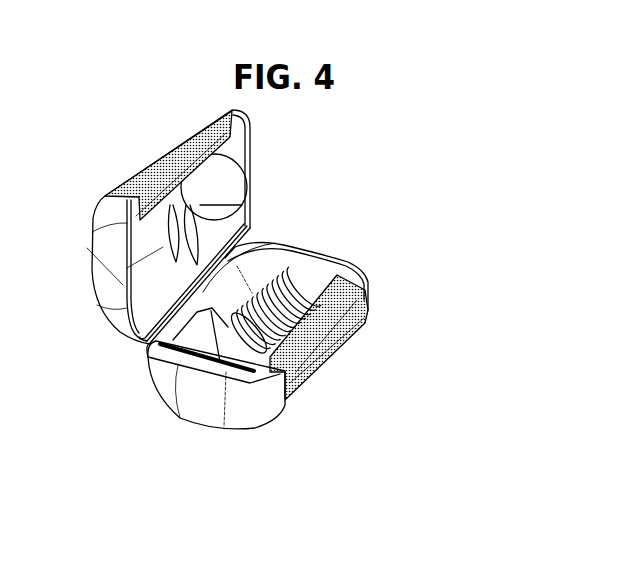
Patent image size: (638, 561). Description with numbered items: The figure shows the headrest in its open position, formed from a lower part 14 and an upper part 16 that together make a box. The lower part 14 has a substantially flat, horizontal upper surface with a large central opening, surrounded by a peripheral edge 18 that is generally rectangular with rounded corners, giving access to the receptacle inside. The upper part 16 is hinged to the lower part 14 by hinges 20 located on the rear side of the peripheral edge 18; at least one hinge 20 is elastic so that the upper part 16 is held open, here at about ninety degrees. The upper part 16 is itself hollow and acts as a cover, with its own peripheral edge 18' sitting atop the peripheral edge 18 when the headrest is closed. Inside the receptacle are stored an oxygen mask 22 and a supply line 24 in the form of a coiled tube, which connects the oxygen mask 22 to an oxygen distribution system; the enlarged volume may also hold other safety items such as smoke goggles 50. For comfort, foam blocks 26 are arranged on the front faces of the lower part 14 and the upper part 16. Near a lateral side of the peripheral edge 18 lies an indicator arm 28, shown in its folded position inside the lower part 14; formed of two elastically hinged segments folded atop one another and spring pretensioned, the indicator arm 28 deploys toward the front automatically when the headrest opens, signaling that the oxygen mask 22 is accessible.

The lower part 14 is at (210, 403).
The upper part 16 is at (92, 252).
The peripheral edge 18 is at (305, 261).
The peripheral edge 18' is at (270, 170).
The hinges 20 is at (225, 258).
The oxygen mask 22 is at (197, 333).
The supply line 24 is at (295, 283).
The foam block 26 is at (168, 160).
The indicator arm 28 is at (190, 358).
The smoke goggles 50 is at (247, 205).